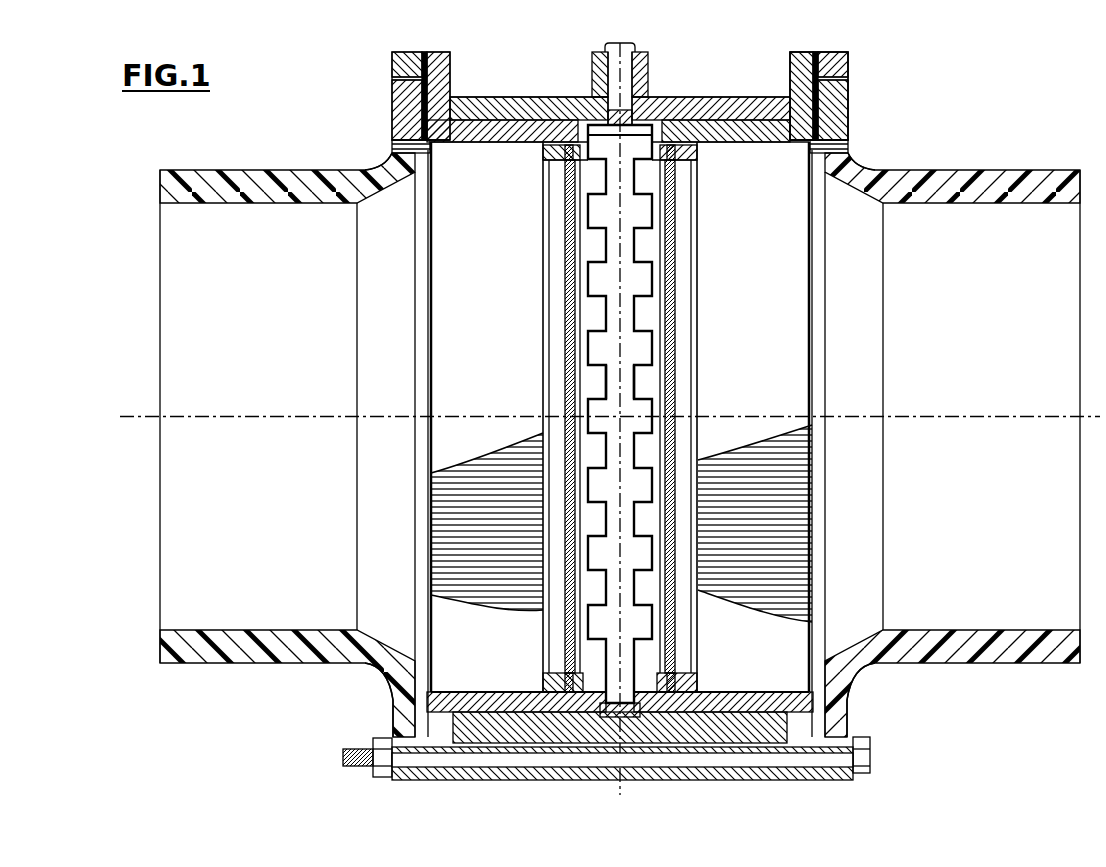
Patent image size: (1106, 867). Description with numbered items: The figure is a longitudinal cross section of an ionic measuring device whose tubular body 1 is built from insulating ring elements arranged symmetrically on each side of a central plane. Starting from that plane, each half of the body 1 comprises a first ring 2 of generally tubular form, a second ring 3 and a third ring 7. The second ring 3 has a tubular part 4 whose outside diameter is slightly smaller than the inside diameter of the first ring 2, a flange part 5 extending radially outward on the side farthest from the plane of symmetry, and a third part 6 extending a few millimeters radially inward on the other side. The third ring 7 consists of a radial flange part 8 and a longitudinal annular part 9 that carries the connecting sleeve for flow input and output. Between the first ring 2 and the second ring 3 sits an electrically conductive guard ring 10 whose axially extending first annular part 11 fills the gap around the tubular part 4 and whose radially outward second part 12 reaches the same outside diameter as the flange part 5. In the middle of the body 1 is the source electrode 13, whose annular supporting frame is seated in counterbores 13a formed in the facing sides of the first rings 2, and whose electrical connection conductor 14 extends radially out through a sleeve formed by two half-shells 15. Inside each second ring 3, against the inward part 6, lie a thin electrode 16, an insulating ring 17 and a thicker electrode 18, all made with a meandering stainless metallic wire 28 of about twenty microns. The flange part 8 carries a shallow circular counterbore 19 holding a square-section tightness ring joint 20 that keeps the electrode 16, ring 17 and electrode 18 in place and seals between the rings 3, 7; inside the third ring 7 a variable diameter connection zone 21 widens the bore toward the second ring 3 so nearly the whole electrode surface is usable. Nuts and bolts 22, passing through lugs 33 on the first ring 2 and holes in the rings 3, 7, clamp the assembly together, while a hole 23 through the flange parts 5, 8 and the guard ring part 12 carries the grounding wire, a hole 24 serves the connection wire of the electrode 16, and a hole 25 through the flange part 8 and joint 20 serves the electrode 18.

The body 1 is at (858, 68).
The first ring 2 is at (543, 97).
The second ring 3 is at (427, 53).
The tubular part 4 is at (492, 99).
The flange part 5 is at (440, 53).
The third part 6 is at (575, 124).
The third ring 7 is at (287, 170).
The flange part 8 is at (405, 60).
The annular part 9 is at (250, 185).
The guard ring 10 is at (477, 98).
The first annular part 11 is at (530, 132).
The second part 12 is at (455, 54).
The source electrode 13 is at (624, 318).
The counterbores 13a is at (690, 688).
The electrical connection conductor 14 is at (600, 52).
The half-shells 15 is at (590, 77).
The electrode 16 is at (566, 240).
The insulating ring 17 is at (508, 118).
The electrode 18 is at (494, 356).
The circular counterbore 19 is at (418, 578).
The tightness ring joint 20 is at (375, 165).
The variable diameter connection zone 21 is at (398, 652).
The nuts and bolts 22 is at (357, 748).
The hole 23 is at (398, 78).
The hole 24 is at (395, 137).
The hole 25 is at (395, 152).
The metallic wire 28 is at (646, 373).
The lugs 33 is at (848, 717).